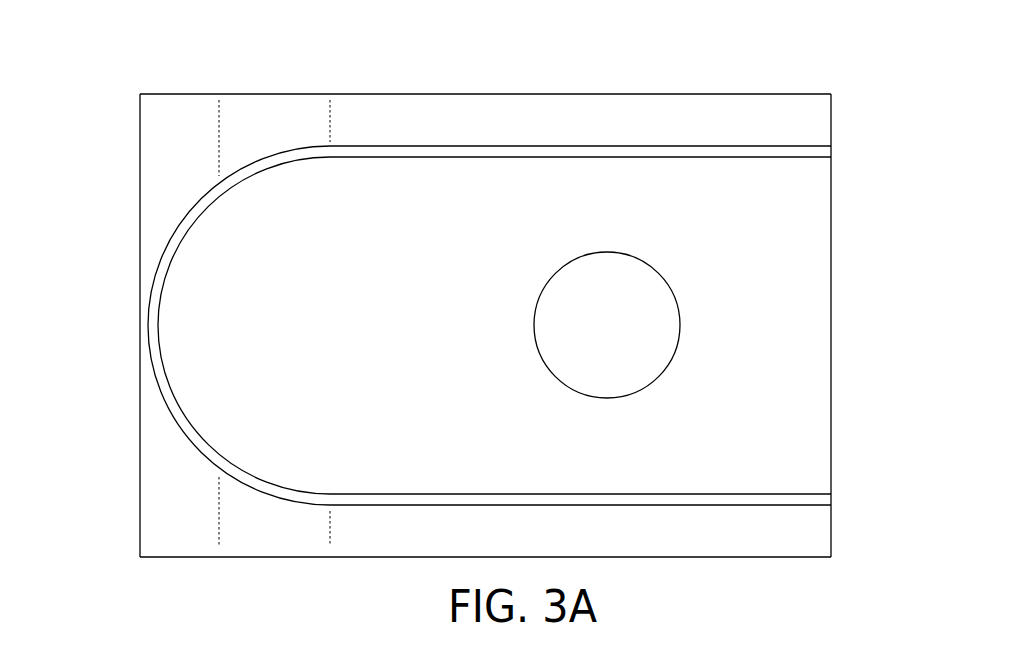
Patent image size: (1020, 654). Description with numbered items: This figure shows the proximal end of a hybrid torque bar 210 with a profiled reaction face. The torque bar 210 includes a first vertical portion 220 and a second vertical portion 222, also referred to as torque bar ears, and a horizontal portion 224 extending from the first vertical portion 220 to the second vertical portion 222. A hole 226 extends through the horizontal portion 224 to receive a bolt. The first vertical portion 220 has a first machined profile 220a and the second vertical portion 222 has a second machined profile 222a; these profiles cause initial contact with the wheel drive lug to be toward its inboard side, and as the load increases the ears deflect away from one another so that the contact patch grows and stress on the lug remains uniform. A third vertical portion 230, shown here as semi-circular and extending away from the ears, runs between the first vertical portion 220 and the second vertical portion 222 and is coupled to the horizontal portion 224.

The torque bar 210 is at (90, 136).
The first vertical portion 220 is at (726, 549).
The first machined profile 220a is at (826, 498).
The second vertical portion 222 is at (709, 100).
The second machined profile 222a is at (831, 155).
The horizontal portion 224 is at (812, 329).
The hole 226 is at (565, 312).
The third vertical portion 230 is at (149, 246).